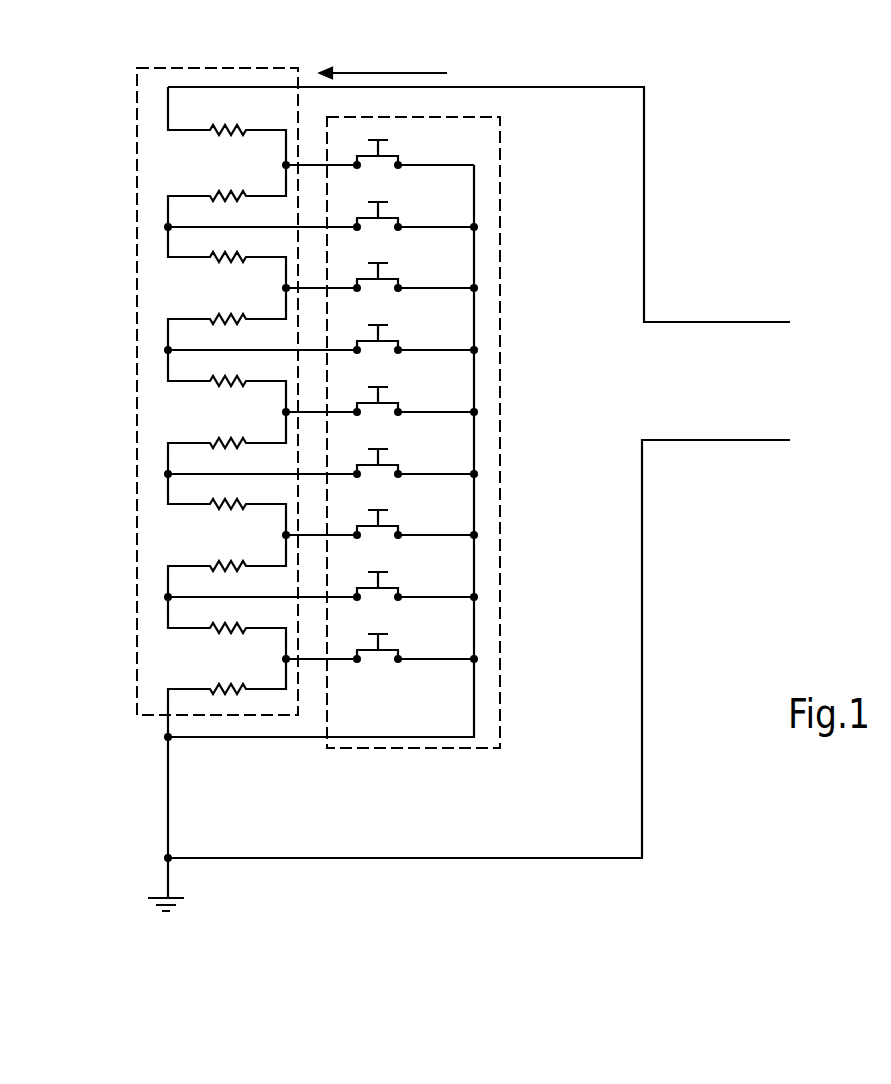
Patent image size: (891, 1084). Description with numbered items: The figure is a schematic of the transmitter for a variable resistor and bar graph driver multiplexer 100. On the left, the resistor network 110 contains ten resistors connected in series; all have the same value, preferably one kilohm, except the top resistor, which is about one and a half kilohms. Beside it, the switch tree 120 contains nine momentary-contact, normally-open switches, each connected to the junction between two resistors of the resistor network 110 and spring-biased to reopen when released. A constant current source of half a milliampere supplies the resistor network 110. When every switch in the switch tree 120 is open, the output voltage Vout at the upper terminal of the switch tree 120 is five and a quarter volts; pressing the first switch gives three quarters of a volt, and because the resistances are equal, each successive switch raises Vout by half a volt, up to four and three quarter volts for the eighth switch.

The variable resistor and bar graph driver multiplexer 100 is at (667, 520).
The resistor network 110 is at (167, 160).
The switch tree 120 is at (480, 133).